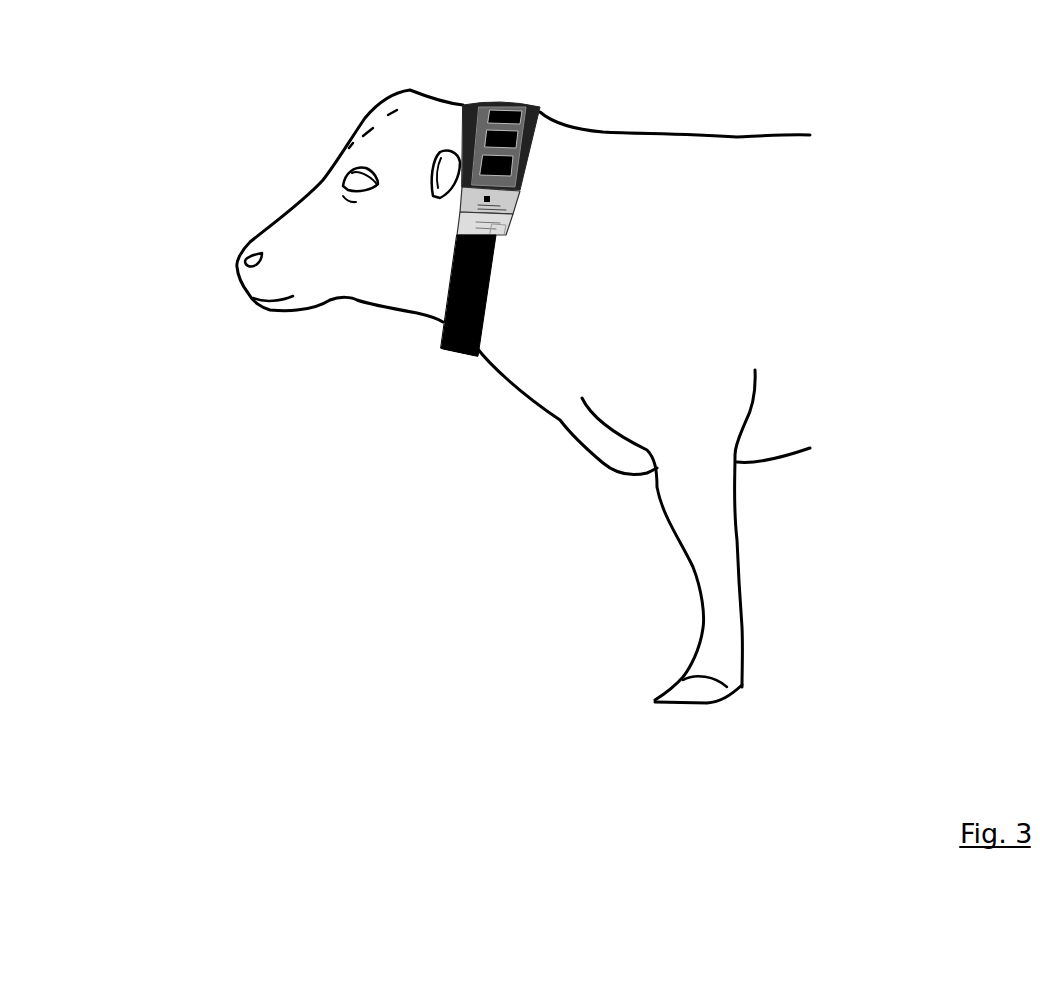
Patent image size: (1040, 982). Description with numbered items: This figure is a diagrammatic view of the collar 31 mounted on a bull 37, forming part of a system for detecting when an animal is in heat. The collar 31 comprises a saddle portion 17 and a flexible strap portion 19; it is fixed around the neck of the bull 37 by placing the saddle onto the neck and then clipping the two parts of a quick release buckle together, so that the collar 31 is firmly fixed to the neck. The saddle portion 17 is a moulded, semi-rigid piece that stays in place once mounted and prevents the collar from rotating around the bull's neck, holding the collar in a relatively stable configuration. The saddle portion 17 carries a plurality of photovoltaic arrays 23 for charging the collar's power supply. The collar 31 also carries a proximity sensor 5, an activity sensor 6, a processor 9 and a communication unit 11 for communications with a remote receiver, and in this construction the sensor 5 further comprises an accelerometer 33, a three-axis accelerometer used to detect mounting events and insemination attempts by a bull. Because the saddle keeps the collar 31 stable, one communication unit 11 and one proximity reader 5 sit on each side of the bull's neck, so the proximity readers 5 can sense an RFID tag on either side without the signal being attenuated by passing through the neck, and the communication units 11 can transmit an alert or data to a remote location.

The proximity sensor 5 is at (497, 233).
The activity sensor 6 is at (483, 233).
The processor 9 is at (497, 188).
The communication unit 11 is at (497, 208).
The saddle portion 17 is at (475, 107).
The flexible strap portion 19 is at (442, 352).
The photovoltaic array 23 is at (507, 111).
The collar 31 is at (550, 90).
The accelerometer 33 is at (498, 243).
The bull 37 is at (258, 193).